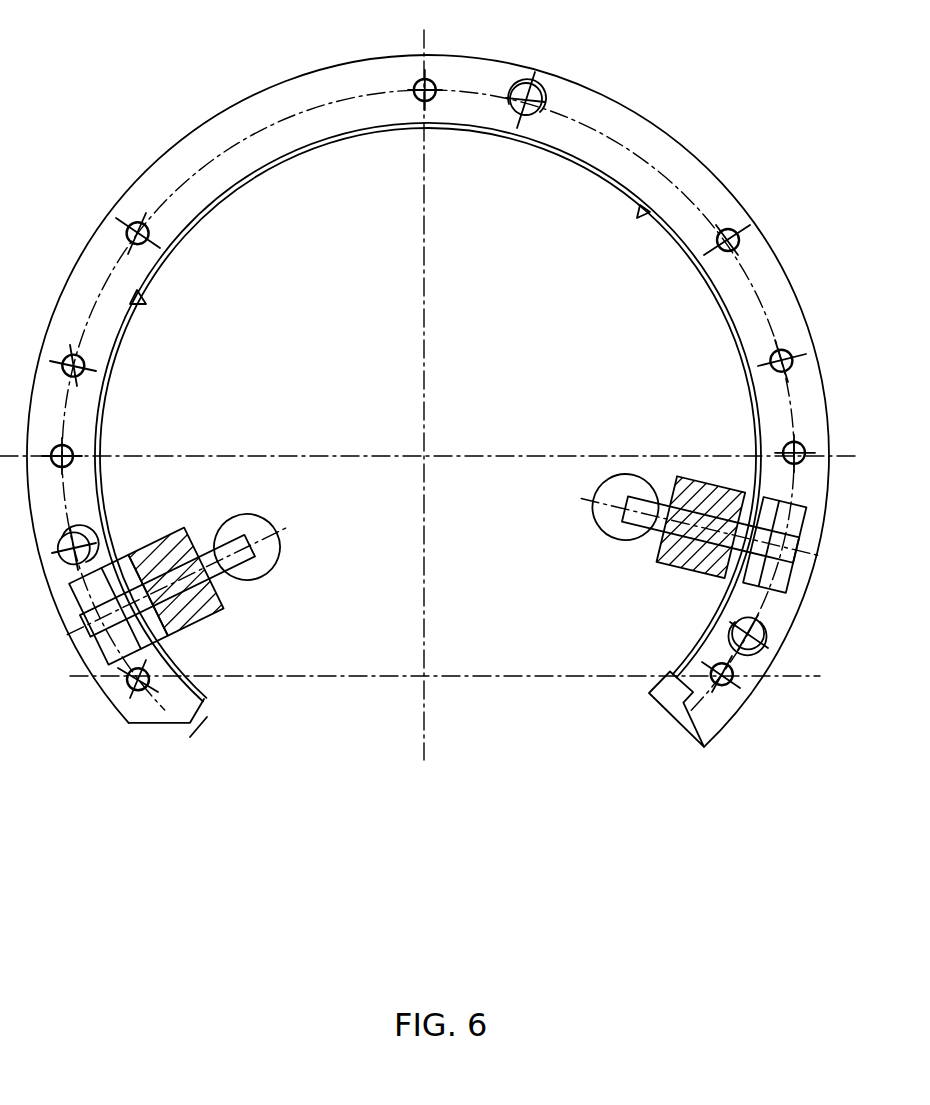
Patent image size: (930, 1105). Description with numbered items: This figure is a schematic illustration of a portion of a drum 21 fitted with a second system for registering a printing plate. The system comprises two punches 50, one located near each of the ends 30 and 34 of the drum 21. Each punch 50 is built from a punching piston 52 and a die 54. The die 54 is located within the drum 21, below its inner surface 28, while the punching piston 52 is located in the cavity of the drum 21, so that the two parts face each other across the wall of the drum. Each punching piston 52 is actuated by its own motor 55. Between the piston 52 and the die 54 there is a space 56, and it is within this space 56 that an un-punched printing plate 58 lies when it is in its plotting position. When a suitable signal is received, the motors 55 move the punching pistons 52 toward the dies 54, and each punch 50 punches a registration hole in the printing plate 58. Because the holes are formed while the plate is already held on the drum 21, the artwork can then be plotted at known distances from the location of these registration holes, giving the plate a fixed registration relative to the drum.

The drum 21 is at (232, 125).
The inner surface 28 is at (137, 292).
The printing plate 58 is at (642, 206).
The punch 50 is at (459, 572).
The punching piston 52 is at (224, 577).
The die 54 is at (118, 640).
The motor 55 is at (275, 549).
The space 56 is at (118, 562).
The end 34 is at (674, 692).
The end 30 is at (207, 718).